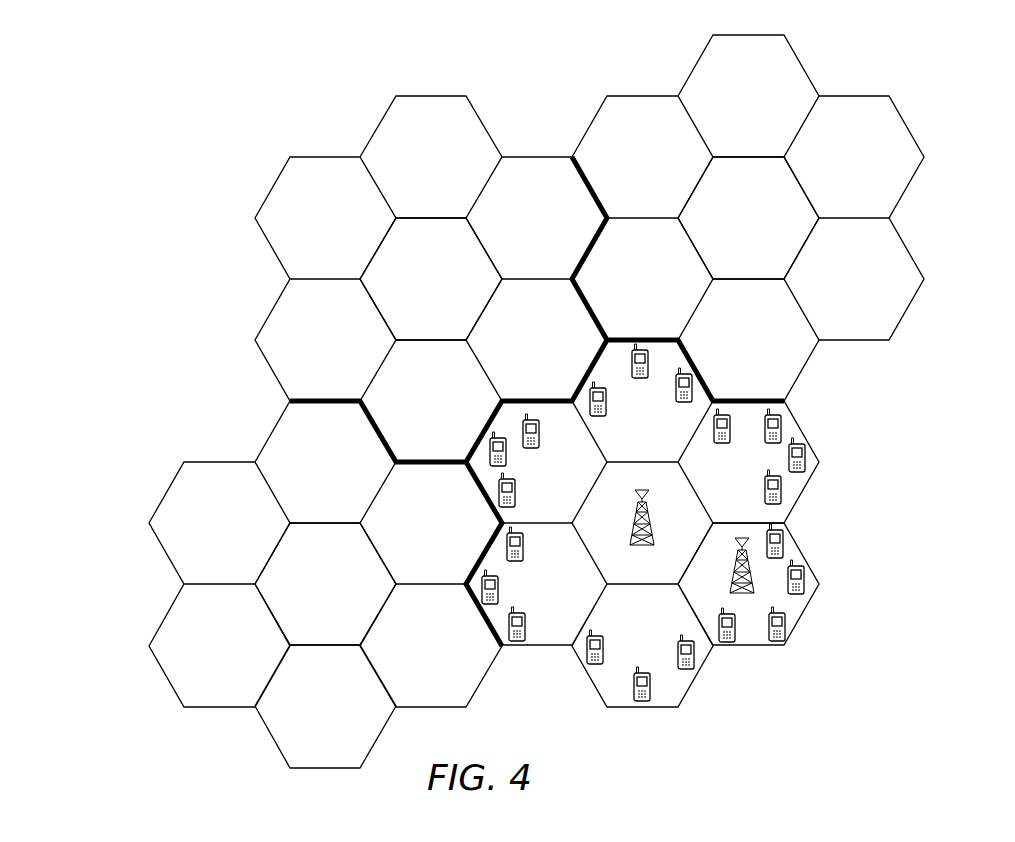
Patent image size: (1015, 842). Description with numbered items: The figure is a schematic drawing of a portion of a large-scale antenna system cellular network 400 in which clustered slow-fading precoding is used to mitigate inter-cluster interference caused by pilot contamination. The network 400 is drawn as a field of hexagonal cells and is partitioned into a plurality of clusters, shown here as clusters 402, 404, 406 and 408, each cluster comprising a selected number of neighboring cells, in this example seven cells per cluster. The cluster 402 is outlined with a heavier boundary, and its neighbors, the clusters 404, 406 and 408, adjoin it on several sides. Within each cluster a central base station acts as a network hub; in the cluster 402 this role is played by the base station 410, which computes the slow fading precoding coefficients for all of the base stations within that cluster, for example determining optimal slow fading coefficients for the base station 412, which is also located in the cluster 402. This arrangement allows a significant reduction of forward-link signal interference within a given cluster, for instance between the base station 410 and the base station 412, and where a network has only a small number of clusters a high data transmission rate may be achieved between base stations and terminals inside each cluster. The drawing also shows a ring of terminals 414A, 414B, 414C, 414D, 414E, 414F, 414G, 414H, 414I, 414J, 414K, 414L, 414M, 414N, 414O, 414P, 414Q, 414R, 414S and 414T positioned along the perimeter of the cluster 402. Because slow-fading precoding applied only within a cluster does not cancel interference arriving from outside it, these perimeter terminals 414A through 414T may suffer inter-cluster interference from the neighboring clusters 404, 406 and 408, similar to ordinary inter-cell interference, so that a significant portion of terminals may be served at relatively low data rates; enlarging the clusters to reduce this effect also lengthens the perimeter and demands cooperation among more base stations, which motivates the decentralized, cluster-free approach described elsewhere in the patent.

The cellular network 400 is at (280, 112).
The cluster 402 is at (713, 512).
The cluster 404 is at (808, 187).
The cluster 406 is at (368, 253).
The cluster 408 is at (272, 548).
The base station 410 is at (630, 547).
The base station 412 is at (753, 593).
The terminal 414A is at (642, 703).
The terminal 414B is at (692, 670).
The terminal 414C is at (732, 642).
The terminal 414D is at (783, 633).
The terminal 414E is at (805, 583).
The terminal 414F is at (785, 547).
The terminal 414G is at (783, 490).
The terminal 414H is at (808, 453).
The terminal 414I is at (780, 423).
The terminal 414J is at (730, 413).
The terminal 414K is at (693, 375).
The terminal 414L is at (644, 350).
The terminal 414M is at (595, 387).
The terminal 414N is at (530, 420).
The terminal 414O is at (488, 435).
The terminal 414P is at (495, 497).
The terminal 414Q is at (507, 548).
The terminal 414R is at (480, 595).
The terminal 414S is at (508, 632).
The terminal 414T is at (593, 667).